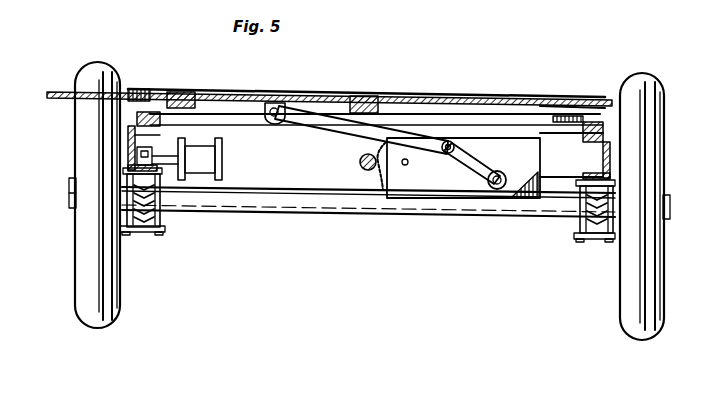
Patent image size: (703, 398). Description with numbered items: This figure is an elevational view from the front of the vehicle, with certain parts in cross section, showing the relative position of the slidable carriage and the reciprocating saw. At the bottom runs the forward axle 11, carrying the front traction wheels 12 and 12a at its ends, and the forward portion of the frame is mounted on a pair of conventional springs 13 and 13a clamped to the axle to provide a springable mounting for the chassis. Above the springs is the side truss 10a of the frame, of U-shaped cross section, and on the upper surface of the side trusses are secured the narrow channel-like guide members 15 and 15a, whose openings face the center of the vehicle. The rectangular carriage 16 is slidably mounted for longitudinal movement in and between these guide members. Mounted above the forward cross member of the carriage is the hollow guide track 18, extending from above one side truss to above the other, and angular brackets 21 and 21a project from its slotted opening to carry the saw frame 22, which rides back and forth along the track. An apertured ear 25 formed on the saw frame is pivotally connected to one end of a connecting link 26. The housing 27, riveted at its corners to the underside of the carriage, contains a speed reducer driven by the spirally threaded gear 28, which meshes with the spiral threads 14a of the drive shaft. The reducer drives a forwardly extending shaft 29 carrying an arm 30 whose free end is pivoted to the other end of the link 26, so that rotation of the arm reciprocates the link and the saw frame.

The side truss 10a is at (586, 151).
The forward axle 11 is at (266, 196).
The front traction wheel 12 is at (625, 305).
The front traction wheel 12a is at (85, 261).
The spring 13 is at (595, 240).
The spring 13a is at (145, 218).
The spiral threads 14a is at (361, 166).
The guide member 15 is at (594, 122).
The guide member 15a is at (136, 118).
The carriage 16 is at (236, 125).
The guide track 18 is at (430, 92).
The angular bracket 21 is at (365, 96).
The angular bracket 21a is at (178, 92).
The saw frame 22 is at (233, 93).
The apertured ear 25 is at (270, 125).
The connecting link 26 is at (321, 120).
The housing 27 is at (418, 198).
The spirally threaded gear 28 is at (374, 180).
The shaft 29 is at (490, 186).
The arm 30 is at (478, 162).